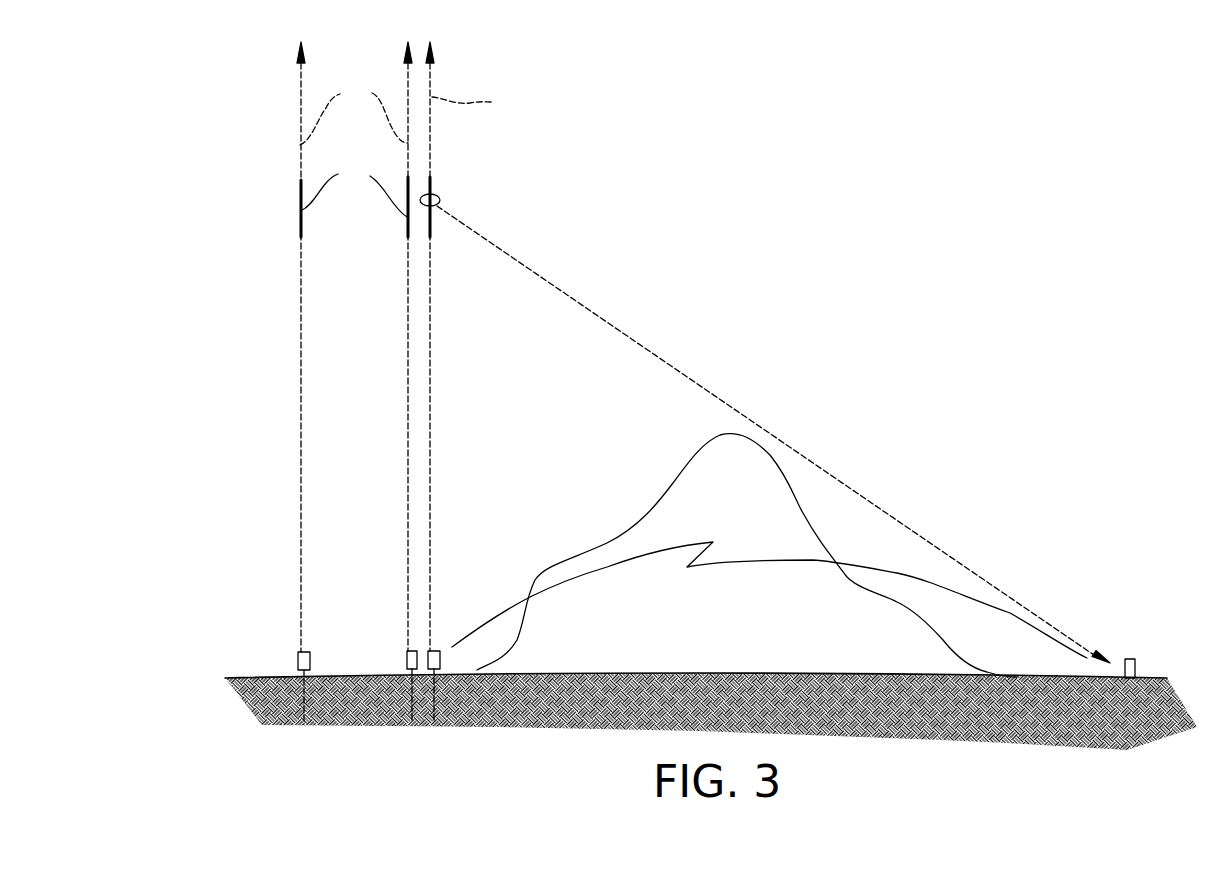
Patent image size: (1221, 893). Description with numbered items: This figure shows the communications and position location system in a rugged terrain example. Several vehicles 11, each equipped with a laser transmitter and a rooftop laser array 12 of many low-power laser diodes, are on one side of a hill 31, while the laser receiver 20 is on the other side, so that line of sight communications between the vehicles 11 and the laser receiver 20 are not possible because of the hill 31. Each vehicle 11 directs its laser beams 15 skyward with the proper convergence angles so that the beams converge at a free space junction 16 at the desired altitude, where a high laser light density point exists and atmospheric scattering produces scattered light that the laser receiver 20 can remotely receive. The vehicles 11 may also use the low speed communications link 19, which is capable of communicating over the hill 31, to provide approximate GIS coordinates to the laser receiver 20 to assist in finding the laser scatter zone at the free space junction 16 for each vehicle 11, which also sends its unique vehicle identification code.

The vehicle 11 is at (433, 745).
The laser array 12 is at (393, 653).
The laser beams 15 is at (410, 112).
The free space junction 16 is at (497, 158).
The data link 19 is at (508, 610).
The laser receiver 20 is at (1133, 659).
The hill 31 is at (637, 525).